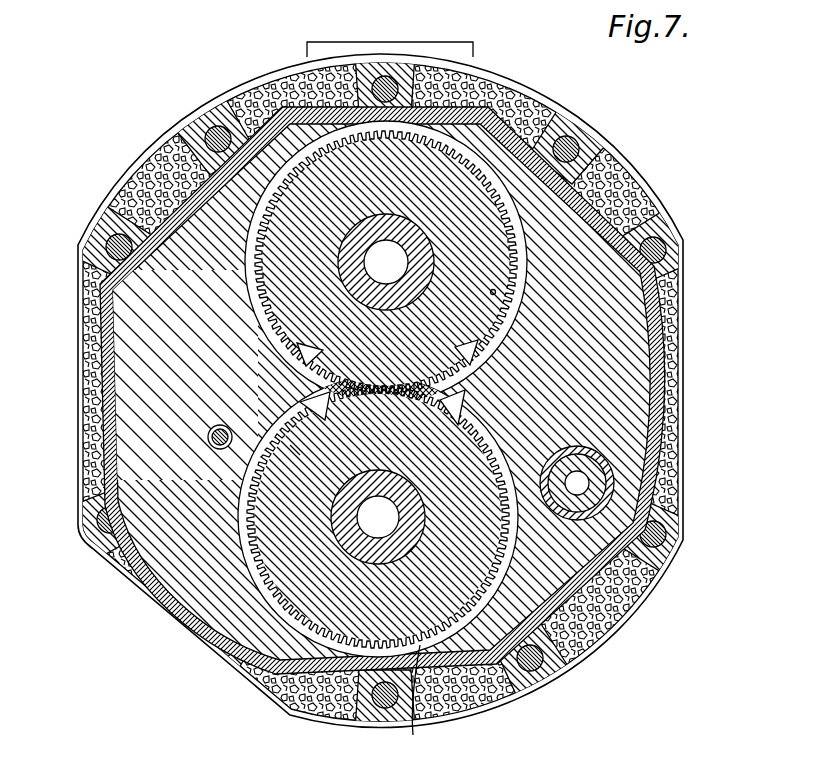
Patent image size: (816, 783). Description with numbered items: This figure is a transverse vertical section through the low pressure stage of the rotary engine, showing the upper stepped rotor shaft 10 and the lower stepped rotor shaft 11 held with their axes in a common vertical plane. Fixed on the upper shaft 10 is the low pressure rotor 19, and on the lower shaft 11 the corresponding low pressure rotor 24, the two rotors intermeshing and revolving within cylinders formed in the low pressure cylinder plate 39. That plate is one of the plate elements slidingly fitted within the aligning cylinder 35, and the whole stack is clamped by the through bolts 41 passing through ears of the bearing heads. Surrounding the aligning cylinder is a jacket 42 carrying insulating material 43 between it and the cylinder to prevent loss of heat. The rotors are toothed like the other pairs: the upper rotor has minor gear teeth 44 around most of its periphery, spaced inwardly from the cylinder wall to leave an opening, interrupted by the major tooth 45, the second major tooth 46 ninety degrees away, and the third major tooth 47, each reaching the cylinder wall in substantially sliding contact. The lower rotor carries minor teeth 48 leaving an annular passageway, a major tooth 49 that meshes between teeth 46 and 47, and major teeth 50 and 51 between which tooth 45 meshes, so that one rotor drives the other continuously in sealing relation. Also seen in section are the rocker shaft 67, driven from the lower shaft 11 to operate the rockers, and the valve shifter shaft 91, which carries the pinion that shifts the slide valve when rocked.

The upper stepped rotor shaft 10 is at (386, 262).
The lower stepped rotor shaft 11 is at (378, 517).
The low pressure rotor 19 is at (384, 150).
The low pressure rotor 24 is at (378, 517).
The aligning cylinder 35 is at (660, 393).
The low pressure cylinder plate 39 is at (568, 578).
The through bolts 41 is at (658, 252).
The jacket 42 is at (686, 328).
The insulating material 43 is at (630, 195).
The gear teeth 44 is at (462, 157).
The major tooth 45 is at (282, 320).
The second major tooth 46 is at (498, 318).
The third major tooth 47 is at (481, 301).
The teeth 48 is at (428, 702).
The major tooth 49 is at (471, 439).
The major tooth 50 is at (319, 416).
The major tooth 51 is at (294, 457).
The rocker shaft 67 is at (597, 481).
The valve shifter shaft 91 is at (208, 438).